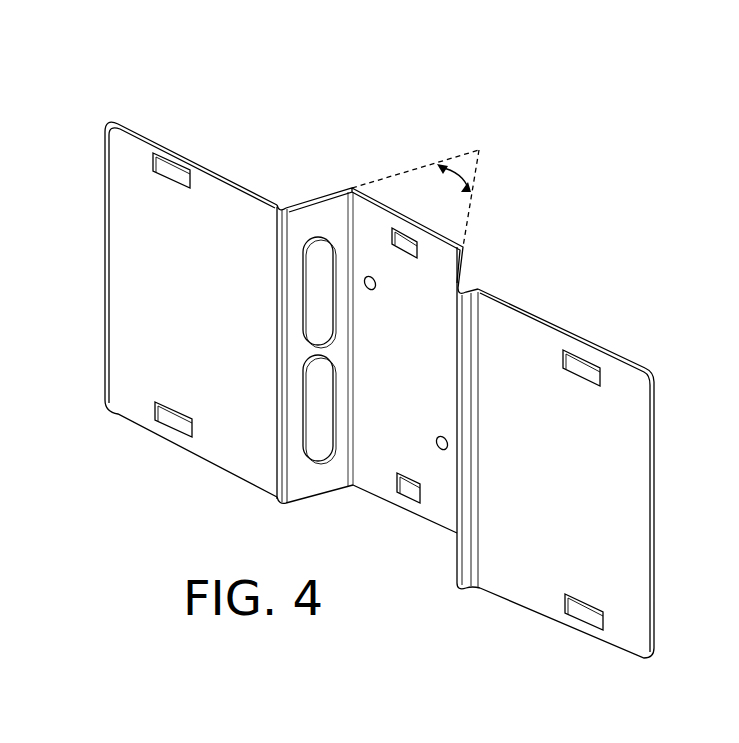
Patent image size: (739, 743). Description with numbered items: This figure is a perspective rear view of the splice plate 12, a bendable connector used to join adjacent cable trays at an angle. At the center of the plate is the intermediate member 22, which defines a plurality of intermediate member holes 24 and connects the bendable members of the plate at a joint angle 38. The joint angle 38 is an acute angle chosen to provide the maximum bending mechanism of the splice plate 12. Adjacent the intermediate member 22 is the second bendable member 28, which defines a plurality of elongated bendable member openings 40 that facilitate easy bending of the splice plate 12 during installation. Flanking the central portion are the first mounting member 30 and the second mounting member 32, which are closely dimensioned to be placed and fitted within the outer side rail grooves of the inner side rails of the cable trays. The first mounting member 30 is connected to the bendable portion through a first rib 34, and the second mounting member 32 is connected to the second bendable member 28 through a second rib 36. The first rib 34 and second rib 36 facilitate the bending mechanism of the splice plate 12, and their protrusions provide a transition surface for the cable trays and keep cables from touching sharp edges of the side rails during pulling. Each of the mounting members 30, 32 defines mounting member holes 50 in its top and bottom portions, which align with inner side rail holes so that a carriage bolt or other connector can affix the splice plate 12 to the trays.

The splice plate 12 is at (375, 358).
The intermediate member 22 is at (378, 478).
The intermediate member holes 24 is at (402, 230).
The second bendable member 28 is at (308, 503).
The first mounting member 30 is at (627, 507).
The second mounting member 32 is at (124, 285).
The first rib 34 is at (470, 285).
The second rib 36 is at (290, 200).
The joint angle 38 is at (469, 190).
The bendable member openings 40 is at (320, 245).
The mounting member holes 50 is at (170, 172).